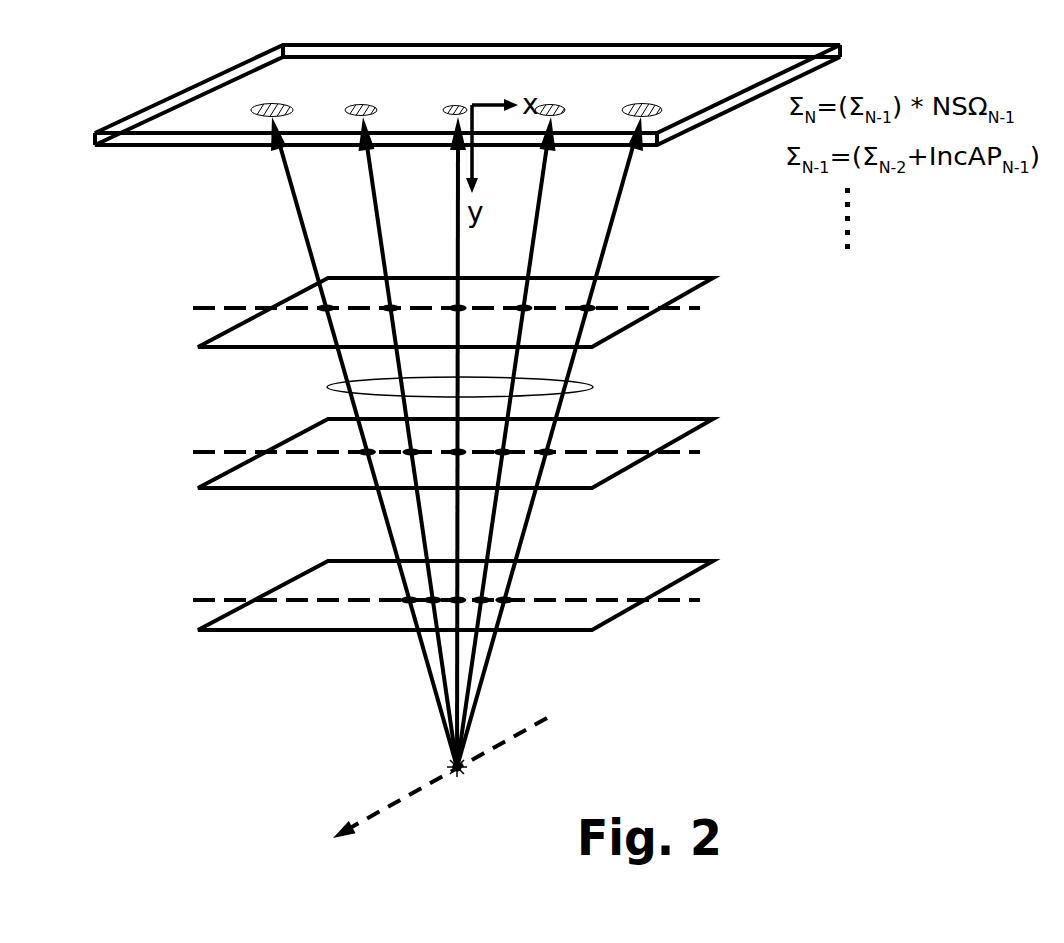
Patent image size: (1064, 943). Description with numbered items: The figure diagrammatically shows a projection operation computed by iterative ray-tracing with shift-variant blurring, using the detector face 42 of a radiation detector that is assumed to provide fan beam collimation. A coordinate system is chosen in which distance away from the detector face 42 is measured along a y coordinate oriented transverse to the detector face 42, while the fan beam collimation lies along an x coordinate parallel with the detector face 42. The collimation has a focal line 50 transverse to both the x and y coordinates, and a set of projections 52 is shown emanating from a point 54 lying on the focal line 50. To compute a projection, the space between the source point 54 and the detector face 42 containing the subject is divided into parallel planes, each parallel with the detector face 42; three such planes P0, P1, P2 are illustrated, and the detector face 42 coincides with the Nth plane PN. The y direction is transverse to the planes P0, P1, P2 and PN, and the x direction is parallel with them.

The detector face 42 is at (198, 175).
The focal line 50 is at (420, 785).
The projections 52 is at (330, 387).
The point on the focal line 54 is at (465, 768).
The Nth plane PN is at (697, 130).
The plane P0 is at (607, 622).
The plane P1 is at (607, 480).
The plane P2 is at (607, 338).